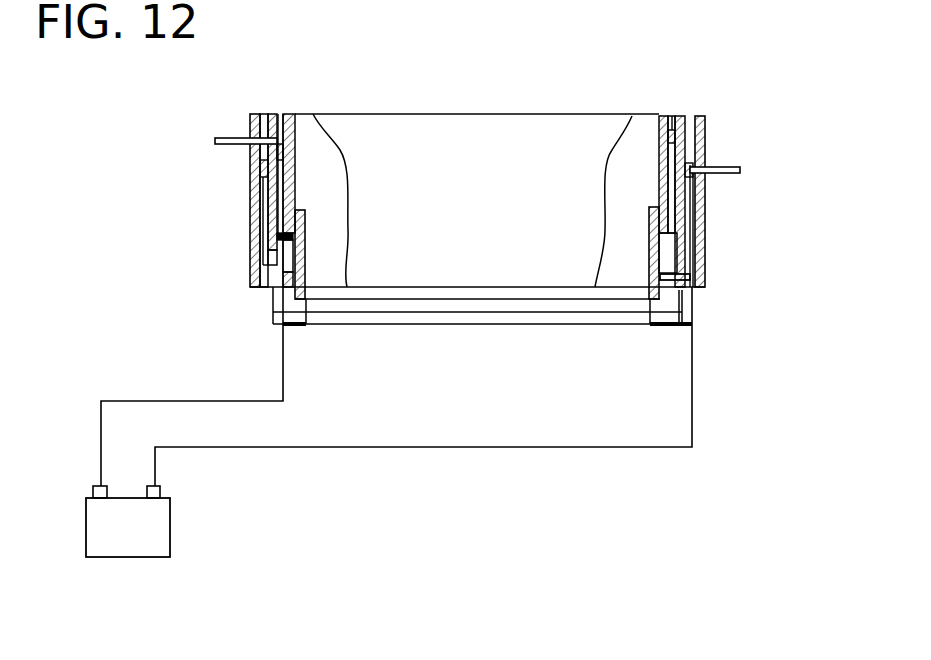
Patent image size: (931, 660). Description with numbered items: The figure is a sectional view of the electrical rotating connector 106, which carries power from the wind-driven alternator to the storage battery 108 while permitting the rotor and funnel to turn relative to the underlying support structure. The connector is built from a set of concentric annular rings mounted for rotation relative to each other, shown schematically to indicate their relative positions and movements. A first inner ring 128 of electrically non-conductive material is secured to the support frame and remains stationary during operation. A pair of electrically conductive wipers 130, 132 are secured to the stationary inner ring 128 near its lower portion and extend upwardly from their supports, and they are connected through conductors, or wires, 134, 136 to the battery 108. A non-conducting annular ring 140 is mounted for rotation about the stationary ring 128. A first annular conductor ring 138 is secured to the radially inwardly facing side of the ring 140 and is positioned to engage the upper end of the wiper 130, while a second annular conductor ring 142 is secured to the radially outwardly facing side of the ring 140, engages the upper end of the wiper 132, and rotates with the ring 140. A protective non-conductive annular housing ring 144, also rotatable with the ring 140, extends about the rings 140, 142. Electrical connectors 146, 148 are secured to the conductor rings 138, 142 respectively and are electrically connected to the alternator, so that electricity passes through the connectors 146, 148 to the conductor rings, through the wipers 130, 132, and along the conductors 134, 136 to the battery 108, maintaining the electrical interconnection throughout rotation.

The rotating connector 106 is at (677, 83).
The battery 108 is at (172, 527).
The first inner ring 128 is at (305, 213).
The wiper 130 is at (296, 247).
The wiper 132 is at (655, 282).
The conductor 134 is at (162, 401).
The conductor 136 is at (692, 395).
The first annular conductor ring 138 is at (266, 152).
The non-conducting annular ring 140 is at (272, 114).
The second annular conductor ring 142 is at (278, 173).
The protective non-conductive annular housing ring 144 is at (251, 218).
The electrical connector 146 is at (214, 140).
The electrical connector 148 is at (741, 171).